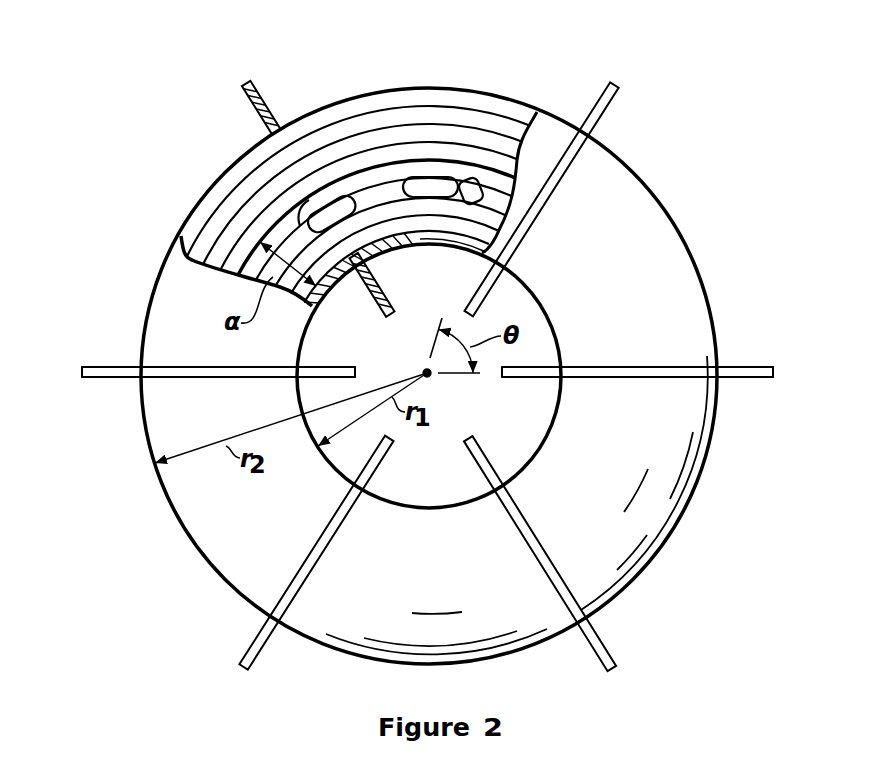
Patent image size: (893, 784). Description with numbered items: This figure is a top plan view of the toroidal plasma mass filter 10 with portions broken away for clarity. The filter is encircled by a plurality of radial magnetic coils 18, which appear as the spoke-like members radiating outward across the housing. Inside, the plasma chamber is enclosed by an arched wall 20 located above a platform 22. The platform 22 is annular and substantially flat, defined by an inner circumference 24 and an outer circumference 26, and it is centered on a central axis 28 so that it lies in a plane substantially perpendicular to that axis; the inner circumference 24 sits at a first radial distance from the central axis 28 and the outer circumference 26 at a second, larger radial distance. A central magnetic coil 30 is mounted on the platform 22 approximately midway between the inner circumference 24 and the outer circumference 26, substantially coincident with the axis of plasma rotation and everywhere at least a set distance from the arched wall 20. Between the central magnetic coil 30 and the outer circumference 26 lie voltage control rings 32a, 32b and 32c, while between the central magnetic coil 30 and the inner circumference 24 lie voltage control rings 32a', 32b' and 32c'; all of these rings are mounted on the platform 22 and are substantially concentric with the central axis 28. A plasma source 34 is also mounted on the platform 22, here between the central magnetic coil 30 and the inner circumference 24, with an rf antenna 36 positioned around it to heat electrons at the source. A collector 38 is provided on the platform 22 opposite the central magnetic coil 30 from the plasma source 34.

The toroidal plasma mass filter 10 is at (723, 215).
The radial magnetic coils 18 is at (247, 83).
The arched wall 20 is at (172, 292).
The platform 22 is at (210, 227).
The inner circumference 24 is at (426, 243).
The outer circumference 26 is at (428, 88).
The central axis 28 is at (436, 378).
The central magnetic coil 30 is at (267, 217).
The voltage control ring 32a is at (362, 159).
The voltage control ring 32b is at (369, 145).
The voltage control ring 32c is at (376, 161).
The voltage control ring 32a' is at (384, 163).
The voltage control ring 32b' is at (414, 151).
The voltage control ring 32c' is at (430, 213).
The plasma source 34 is at (337, 225).
The rf antenna 36 is at (303, 193).
The collector 38 is at (300, 112).